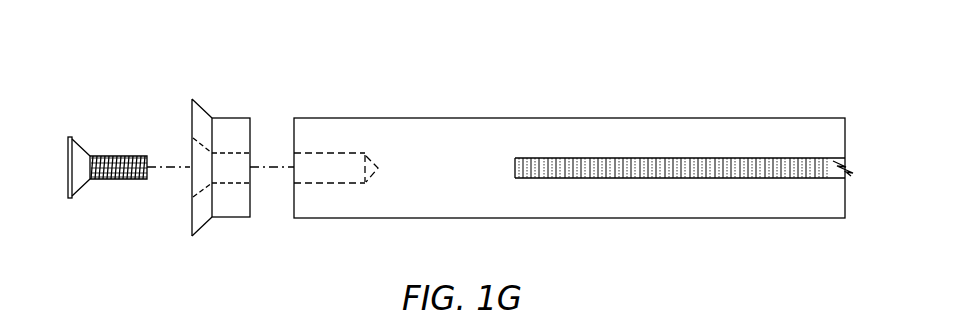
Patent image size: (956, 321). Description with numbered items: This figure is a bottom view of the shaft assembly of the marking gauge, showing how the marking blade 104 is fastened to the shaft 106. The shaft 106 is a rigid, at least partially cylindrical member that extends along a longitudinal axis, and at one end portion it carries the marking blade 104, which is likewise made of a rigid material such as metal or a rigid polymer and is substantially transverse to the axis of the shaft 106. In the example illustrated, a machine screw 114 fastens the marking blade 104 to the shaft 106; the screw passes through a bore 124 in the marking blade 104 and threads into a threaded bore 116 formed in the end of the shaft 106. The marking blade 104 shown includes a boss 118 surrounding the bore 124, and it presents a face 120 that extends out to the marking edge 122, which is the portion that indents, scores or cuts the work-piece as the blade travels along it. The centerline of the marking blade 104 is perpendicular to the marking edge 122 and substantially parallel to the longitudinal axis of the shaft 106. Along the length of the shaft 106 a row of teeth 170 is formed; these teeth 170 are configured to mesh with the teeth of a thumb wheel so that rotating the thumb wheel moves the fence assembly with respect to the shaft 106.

The machine screw 114 is at (80, 139).
The marking blade 104 is at (199, 104).
The boss 118 is at (232, 118).
The face 120 is at (192, 212).
The marking edge 122 is at (193, 238).
The bore 124 is at (230, 184).
The shaft 106 is at (568, 118).
The threaded bore 116 is at (329, 153).
The teeth 170 is at (722, 178).